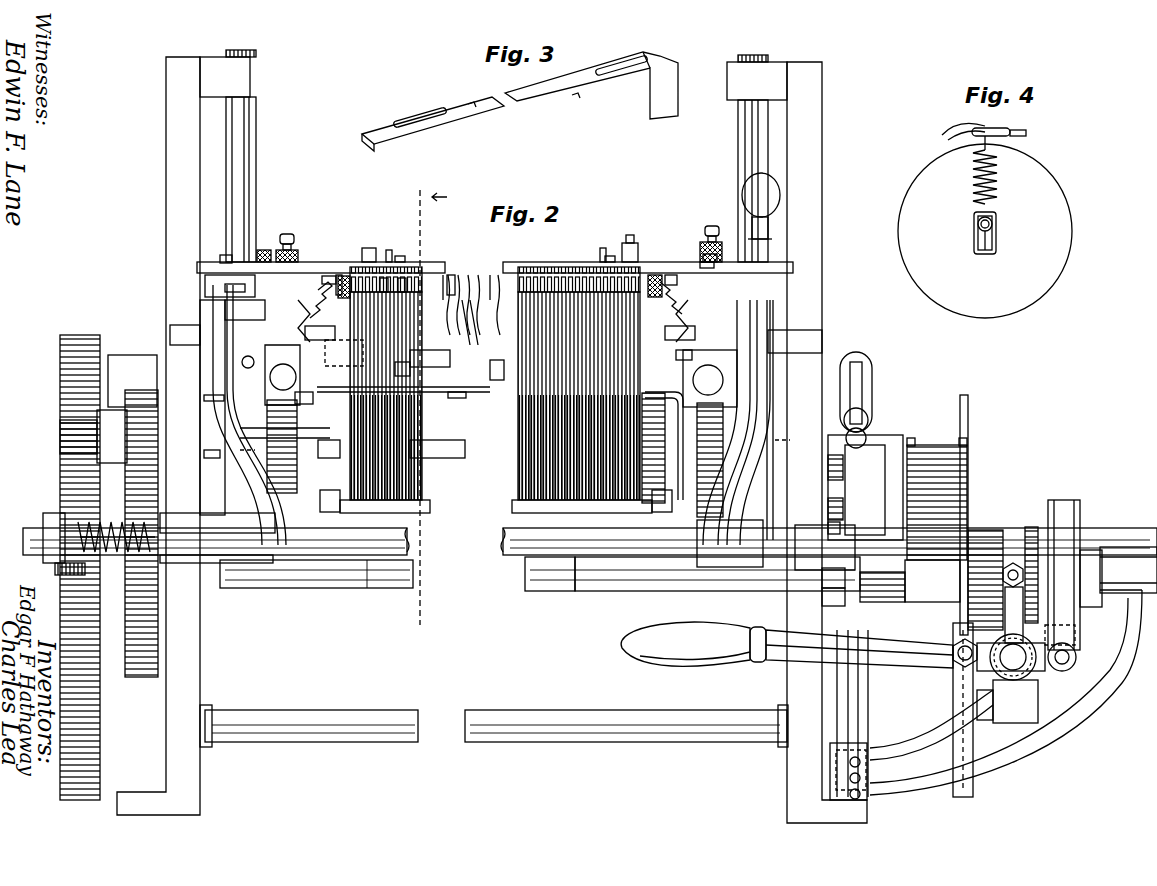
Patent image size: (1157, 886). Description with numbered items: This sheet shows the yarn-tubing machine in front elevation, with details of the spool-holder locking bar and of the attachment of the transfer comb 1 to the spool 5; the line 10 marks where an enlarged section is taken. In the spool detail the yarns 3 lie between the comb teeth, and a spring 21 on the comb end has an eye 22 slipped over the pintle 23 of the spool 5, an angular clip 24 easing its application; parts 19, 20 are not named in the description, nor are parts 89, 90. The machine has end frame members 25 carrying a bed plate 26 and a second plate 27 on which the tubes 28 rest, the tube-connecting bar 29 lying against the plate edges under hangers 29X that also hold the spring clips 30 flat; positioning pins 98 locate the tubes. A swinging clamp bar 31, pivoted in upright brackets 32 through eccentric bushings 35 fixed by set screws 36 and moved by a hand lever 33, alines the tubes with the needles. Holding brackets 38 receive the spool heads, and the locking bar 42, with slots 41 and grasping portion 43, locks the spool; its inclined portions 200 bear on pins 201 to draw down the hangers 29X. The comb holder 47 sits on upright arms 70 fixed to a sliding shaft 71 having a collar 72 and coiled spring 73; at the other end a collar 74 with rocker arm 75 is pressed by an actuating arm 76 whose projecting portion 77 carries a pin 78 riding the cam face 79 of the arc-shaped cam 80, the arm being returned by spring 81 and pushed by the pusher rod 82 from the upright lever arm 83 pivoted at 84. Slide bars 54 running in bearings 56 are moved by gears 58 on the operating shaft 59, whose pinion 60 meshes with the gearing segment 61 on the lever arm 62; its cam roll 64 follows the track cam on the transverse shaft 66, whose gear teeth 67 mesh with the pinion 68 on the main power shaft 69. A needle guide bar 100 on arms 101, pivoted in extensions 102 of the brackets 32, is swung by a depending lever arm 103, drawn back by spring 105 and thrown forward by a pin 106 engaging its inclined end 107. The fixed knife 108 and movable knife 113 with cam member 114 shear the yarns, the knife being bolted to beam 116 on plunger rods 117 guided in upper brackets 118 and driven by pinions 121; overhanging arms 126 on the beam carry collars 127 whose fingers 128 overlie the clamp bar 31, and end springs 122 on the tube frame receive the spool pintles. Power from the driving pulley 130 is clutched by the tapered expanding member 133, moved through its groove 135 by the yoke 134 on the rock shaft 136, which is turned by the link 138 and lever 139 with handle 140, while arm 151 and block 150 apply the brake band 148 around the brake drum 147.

In FIG. 4, the transfer comb 1 is at (960, 140).
In FIG. 4, the yarns 3 is at (945, 134).
In FIG. 2, the spool 5 is at (515, 478).
In FIG. 4, the spool 5 is at (1066, 240).
In FIG. 2, the section line 10 is at (422, 407).
In FIG. 2, the needle latch 19 is at (383, 278).
In FIG. 4, the needle latch 19 is at (1000, 133).
In FIG. 4, the latch pivot 20 is at (1026, 134).
In FIG. 2, the spring 21 is at (306, 312).
In FIG. 4, the spring 21 is at (1000, 190).
In FIG. 4, the eye 22 is at (997, 228).
In FIG. 2, the pintle 23 is at (352, 505).
In FIG. 4, the pintle 23 is at (977, 228).
In FIG. 4, the angular clip 24 is at (990, 255).
In FIG. 2, the end frame members 25 is at (176, 162).
In FIG. 2, the bed plate 26 is at (175, 330).
In FIG. 2, the second plate 27 is at (472, 280).
In FIG. 2, the tubes 28 is at (401, 278).
In FIG. 2, the tube-connecting bar 29 is at (560, 272).
In FIG. 2, the hangers 29X is at (422, 376).
In FIG. 2, the spring clips 30 is at (430, 356).
In FIG. 2, the swinging clamp bar 31 is at (444, 275).
In FIG. 2, the upright brackets 32 is at (292, 251).
In FIG. 2, the hand lever 33 is at (752, 192).
In FIG. 2, the bushing 35 is at (263, 250).
In FIG. 2, the set screw 36 is at (287, 236).
In FIG. 2, the holding brackets 38 is at (322, 498).
In FIG. 3, the slot 41 is at (415, 122).
In FIG. 2, the locking bar 42 is at (428, 393).
In FIG. 3, the locking bar 42 is at (483, 118).
In FIG. 2, the grasping portion 43 is at (690, 418).
In FIG. 3, the grasping portion 43 is at (652, 100).
In FIG. 2, the comb holder 47 is at (328, 276).
In FIG. 2, the slide bar 54 is at (283, 370).
In FIG. 2, the bearing 56 is at (296, 398).
In FIG. 2, the gears 58 is at (298, 488).
In FIG. 2, the operating shaft 59 is at (458, 447).
In FIG. 2, the pinion 60 is at (70, 432).
In FIG. 2, the gearing segment 61 is at (140, 665).
In FIG. 2, the lever arm 62 is at (845, 585).
In FIG. 2, the cam roll 64 is at (120, 360).
In FIG. 2, the transverse shaft 66 is at (390, 583).
In FIG. 2, the gear teeth 67 is at (65, 393).
In FIG. 2, the pinion 68 is at (58, 570).
In FIG. 2, the main power shaft 69 is at (605, 578).
In FIG. 2, the upright supporting arms 70 is at (208, 368).
In FIG. 2, the transverse shaft 71 is at (503, 532).
In FIG. 2, the collar 72 is at (52, 512).
In FIG. 2, the coiled spring 73 is at (112, 520).
In FIG. 2, the collar 74 is at (895, 535).
In FIG. 2, the rocker arm 75 is at (880, 495).
In FIG. 2, the actuating arm 76 is at (845, 475).
In FIG. 2, the projecting portion 77 is at (878, 602).
In FIG. 2, the transverse pin 78 is at (840, 592).
In FIG. 2, the cam face 79 is at (828, 572).
In FIG. 2, the arc-shaped cam 80 is at (828, 527).
In FIG. 2, the spring 81 is at (828, 500).
In FIG. 2, the pusher rod 82 is at (862, 392).
In FIG. 2, the upright lever arm 83 is at (872, 375).
In FIG. 2, the pivot 84 is at (870, 785).
In FIG. 2, the ratchet 89 is at (828, 462).
In FIG. 2, the link 90 is at (864, 438).
In FIG. 2, the positioning pins 98 is at (346, 276).
In FIG. 2, the needle guide bar 100 is at (510, 273).
In FIG. 2, the arms 101 is at (222, 260).
In FIG. 2, the extensions 102 is at (230, 282).
In FIG. 2, the depending lever arm 103 is at (240, 320).
In FIG. 2, the spring 105 is at (243, 360).
In FIG. 2, the pin 106 is at (220, 398).
In FIG. 2, the inclined end 107 is at (215, 455).
In FIG. 2, the fixed knife 108 is at (490, 370).
In FIG. 2, the movable knife 113 is at (470, 345).
In FIG. 2, the cam member 114 is at (340, 275).
In FIG. 2, the supporting beam 116 is at (225, 290).
In FIG. 2, the plunger rod 117 is at (247, 128).
In FIG. 2, the upper bracket 118 is at (215, 65).
In FIG. 2, the pinion 121 is at (240, 450).
In FIG. 2, the end springs 122 is at (305, 333).
In FIG. 2, the overhanging supporting arm 126 is at (402, 260).
In FIG. 2, the collar 127 is at (390, 250).
In FIG. 2, the finger 128 is at (368, 248).
In FIG. 2, the driving pulley 130 is at (965, 505).
In FIG. 2, the tapered expanding member 133 is at (975, 532).
In FIG. 2, the yoke 134 is at (1018, 562).
In FIG. 2, the circumferential groove 135 is at (1040, 545).
In FIG. 2, the rock shaft 136 is at (1018, 660).
In FIG. 2, the link 138 is at (975, 782).
In FIG. 2, the lever 139 is at (902, 662).
In FIG. 2, the handle 140 is at (662, 648).
In FIG. 2, the brake drum 147 is at (1062, 512).
In FIG. 2, the brake band 148 is at (1070, 556).
In FIG. 2, the block 150 is at (1068, 635).
In FIG. 2, the arm 151 is at (1076, 658).
In FIG. 3, the inclined portions 200 is at (471, 102).
In FIG. 2, the pin 201 is at (453, 406).